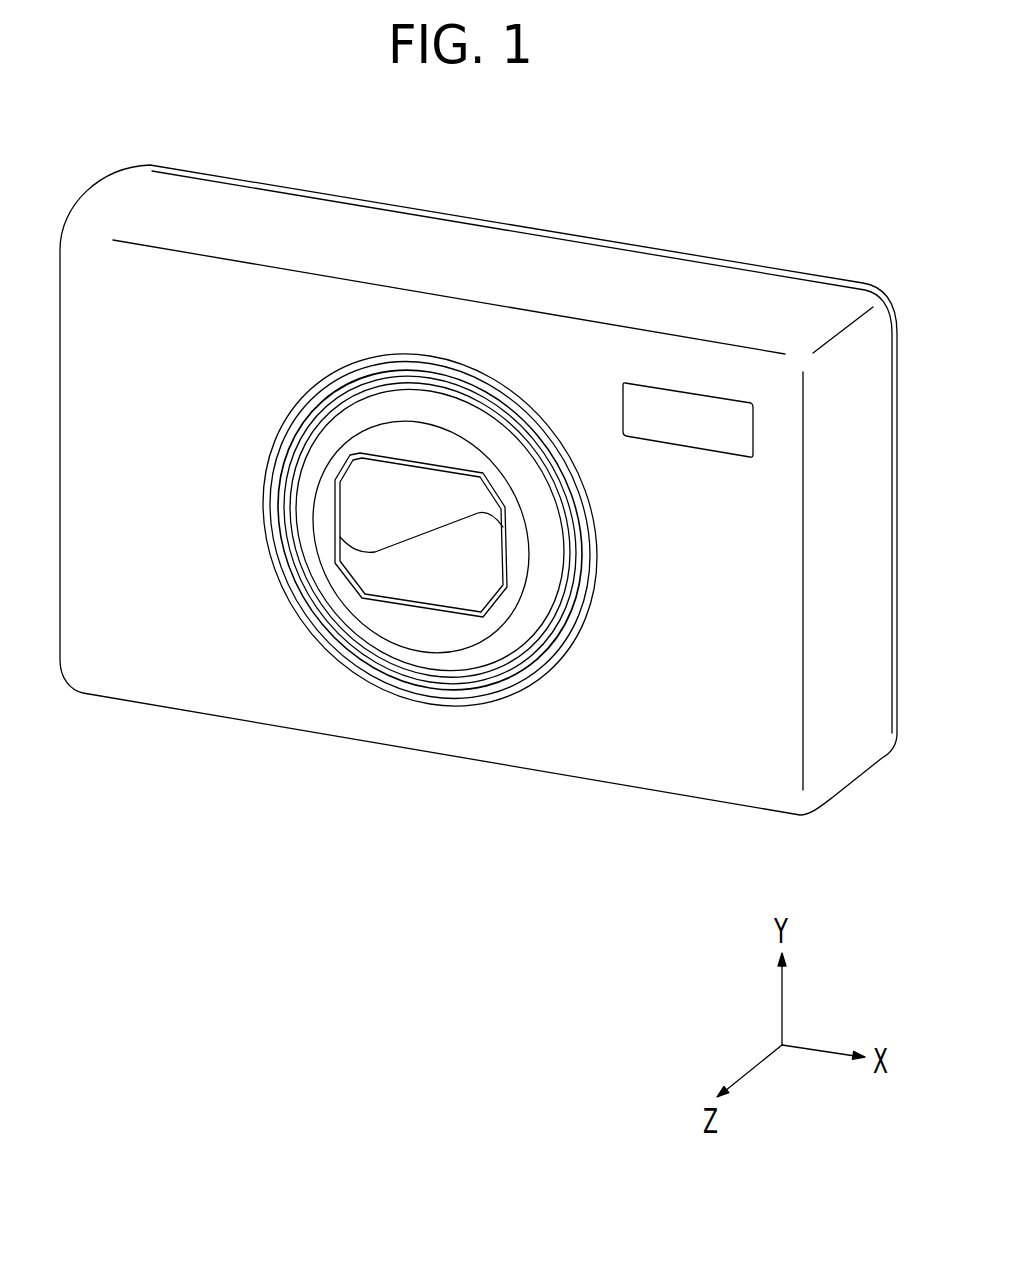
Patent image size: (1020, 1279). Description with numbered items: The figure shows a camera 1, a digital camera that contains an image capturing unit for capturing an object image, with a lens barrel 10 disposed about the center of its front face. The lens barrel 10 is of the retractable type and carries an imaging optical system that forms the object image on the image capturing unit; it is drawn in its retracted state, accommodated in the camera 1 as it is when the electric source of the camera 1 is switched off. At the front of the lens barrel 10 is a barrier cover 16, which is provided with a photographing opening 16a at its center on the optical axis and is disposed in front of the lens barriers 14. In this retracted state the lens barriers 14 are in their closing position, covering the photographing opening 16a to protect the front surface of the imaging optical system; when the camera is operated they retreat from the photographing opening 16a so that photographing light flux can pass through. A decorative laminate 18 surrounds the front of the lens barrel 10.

The camera 1 is at (868, 613).
The lens barrel 10 is at (473, 707).
The lens barriers 14 is at (410, 568).
The barrier cover 16 is at (447, 635).
The photographing opening 16a is at (420, 613).
The decorative laminate 18 is at (310, 585).